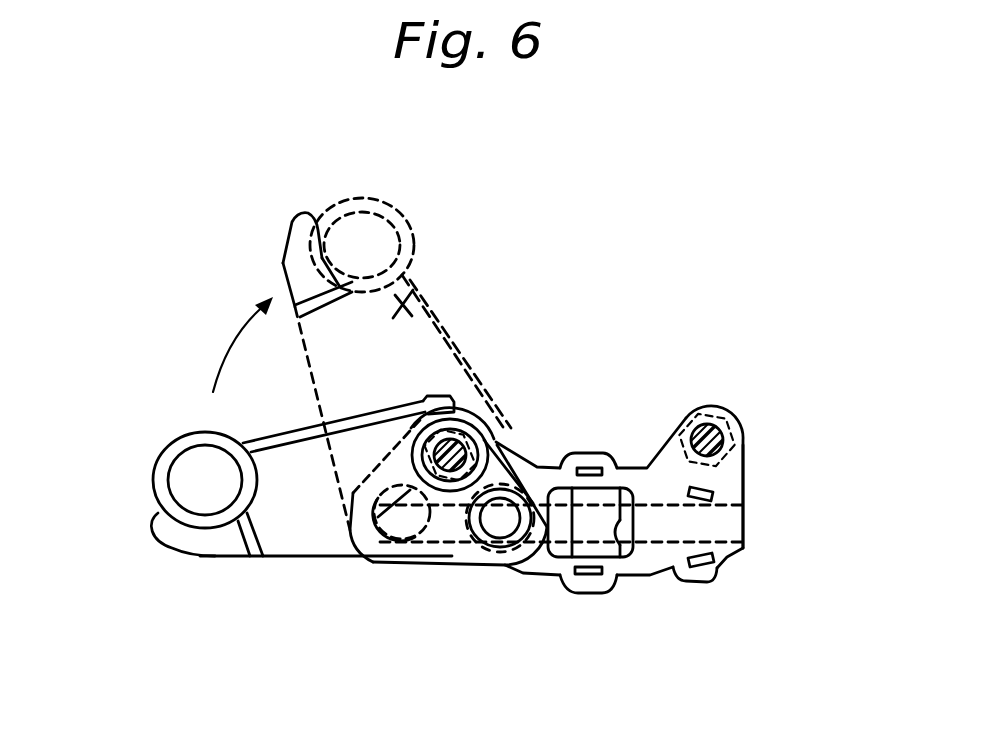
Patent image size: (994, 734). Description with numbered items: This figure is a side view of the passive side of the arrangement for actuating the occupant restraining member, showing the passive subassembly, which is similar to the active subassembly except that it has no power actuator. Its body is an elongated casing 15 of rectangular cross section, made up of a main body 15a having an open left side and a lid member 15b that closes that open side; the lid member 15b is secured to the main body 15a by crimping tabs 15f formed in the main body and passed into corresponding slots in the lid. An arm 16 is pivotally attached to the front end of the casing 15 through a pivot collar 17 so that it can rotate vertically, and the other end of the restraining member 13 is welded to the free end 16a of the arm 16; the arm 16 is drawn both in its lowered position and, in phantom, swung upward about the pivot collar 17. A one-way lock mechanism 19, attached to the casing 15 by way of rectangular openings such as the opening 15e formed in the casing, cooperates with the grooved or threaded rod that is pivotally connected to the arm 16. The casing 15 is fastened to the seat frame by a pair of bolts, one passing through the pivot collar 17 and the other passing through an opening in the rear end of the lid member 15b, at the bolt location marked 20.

The restraining member 13 is at (185, 468).
The casing 15 is at (851, 428).
The main body 15a is at (727, 483).
The lid member 15b is at (745, 457).
The rectangular opening 15e is at (620, 532).
The crimping tabs 15f is at (585, 582).
The arm 16 is at (316, 548).
The free end 16a is at (172, 532).
The pivot collar 17 is at (495, 440).
The one-way lock mechanism 19 is at (603, 508).
The bolt 20 is at (736, 430).